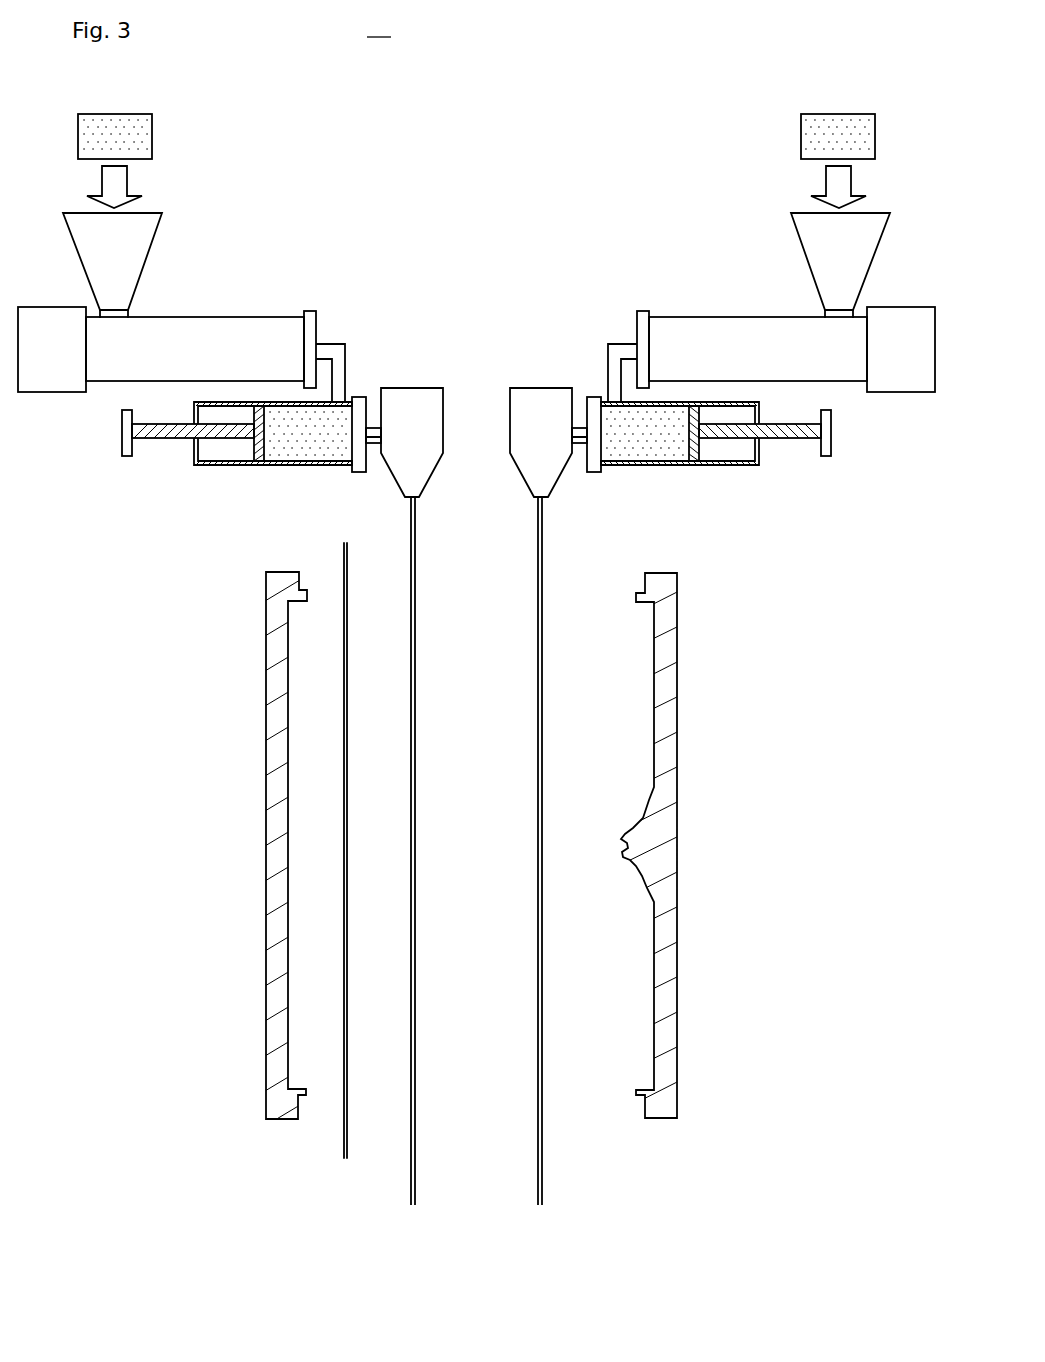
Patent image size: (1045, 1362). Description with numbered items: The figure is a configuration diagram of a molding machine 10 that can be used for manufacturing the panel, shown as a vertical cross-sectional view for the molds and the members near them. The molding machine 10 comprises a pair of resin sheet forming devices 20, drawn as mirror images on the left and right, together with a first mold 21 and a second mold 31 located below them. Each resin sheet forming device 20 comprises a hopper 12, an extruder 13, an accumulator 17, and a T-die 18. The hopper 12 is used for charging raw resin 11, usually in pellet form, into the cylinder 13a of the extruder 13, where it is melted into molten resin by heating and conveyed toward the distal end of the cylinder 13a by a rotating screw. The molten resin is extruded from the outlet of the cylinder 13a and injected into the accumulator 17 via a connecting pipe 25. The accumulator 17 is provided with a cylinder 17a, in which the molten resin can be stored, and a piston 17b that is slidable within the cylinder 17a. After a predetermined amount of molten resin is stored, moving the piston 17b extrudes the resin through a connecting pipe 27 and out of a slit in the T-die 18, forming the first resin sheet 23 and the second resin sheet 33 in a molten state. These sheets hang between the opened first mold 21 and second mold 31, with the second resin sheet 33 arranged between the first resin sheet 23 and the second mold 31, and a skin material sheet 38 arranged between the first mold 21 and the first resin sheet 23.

The molding machine 10 is at (380, 27).
The raw resin 11 is at (147, 132).
The hopper 12 is at (85, 244).
The extruder 13 is at (476, 321).
The cylinder 13a is at (218, 330).
The accumulator 17 is at (271, 481).
The cylinder 17a is at (215, 466).
The piston 17b is at (153, 439).
The T-die 18 is at (420, 392).
The resin sheet forming device 20 is at (293, 184).
The first mold 21 is at (281, 1110).
The first resin sheet 23 is at (410, 512).
The connecting pipe 25 is at (326, 349).
The connecting pipe 27 is at (371, 428).
The second mold 31 is at (657, 1105).
The second resin sheet 33 is at (543, 512).
The skin material sheet 38 is at (346, 940).